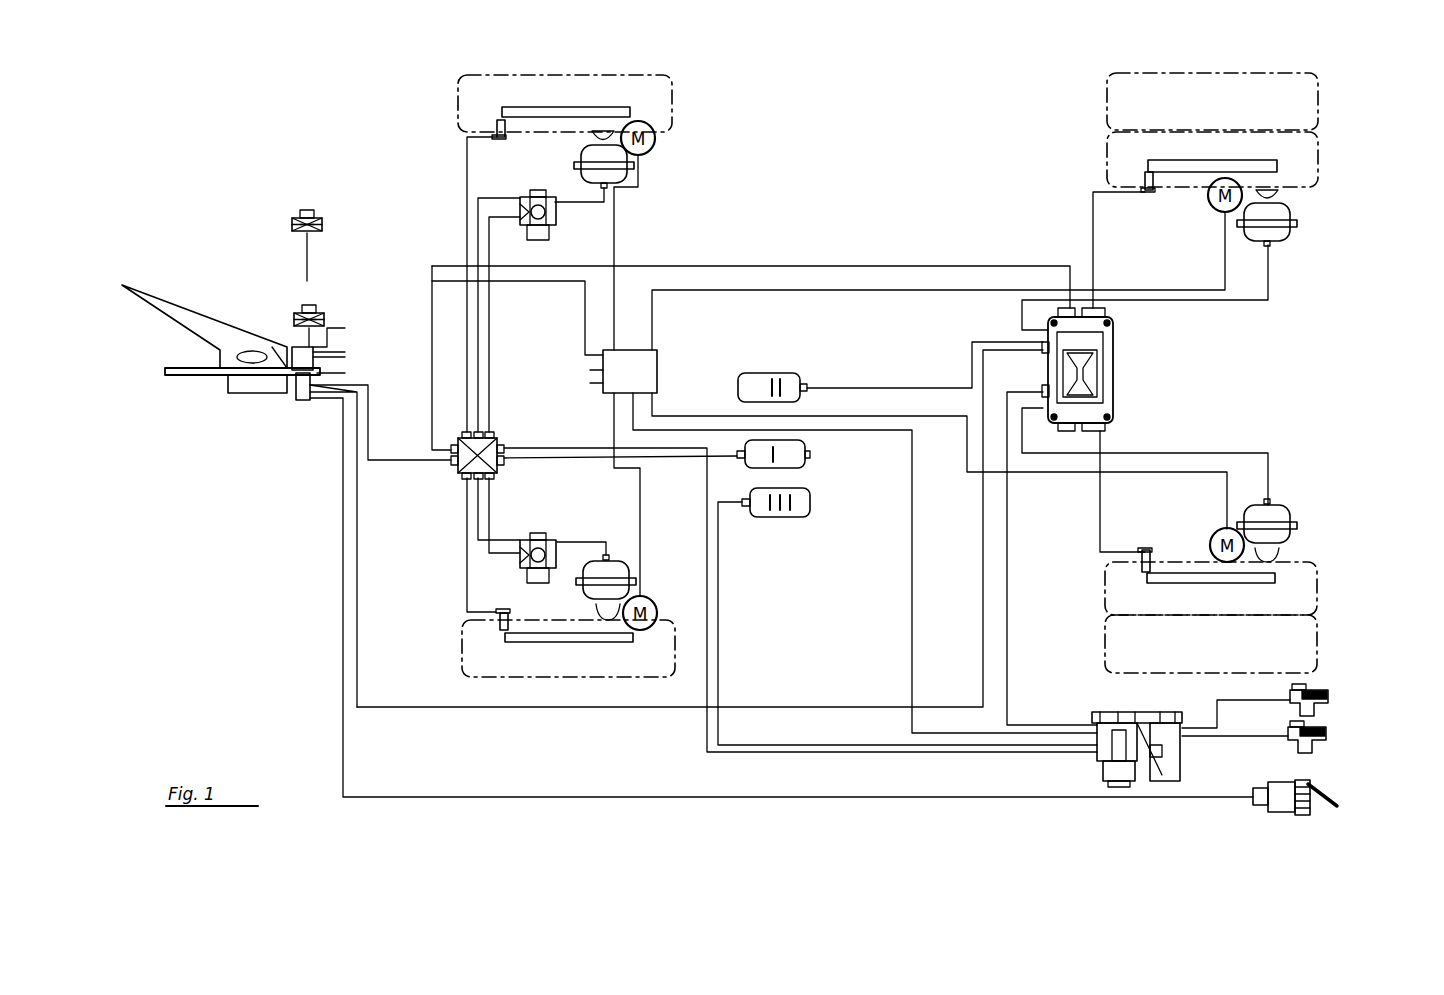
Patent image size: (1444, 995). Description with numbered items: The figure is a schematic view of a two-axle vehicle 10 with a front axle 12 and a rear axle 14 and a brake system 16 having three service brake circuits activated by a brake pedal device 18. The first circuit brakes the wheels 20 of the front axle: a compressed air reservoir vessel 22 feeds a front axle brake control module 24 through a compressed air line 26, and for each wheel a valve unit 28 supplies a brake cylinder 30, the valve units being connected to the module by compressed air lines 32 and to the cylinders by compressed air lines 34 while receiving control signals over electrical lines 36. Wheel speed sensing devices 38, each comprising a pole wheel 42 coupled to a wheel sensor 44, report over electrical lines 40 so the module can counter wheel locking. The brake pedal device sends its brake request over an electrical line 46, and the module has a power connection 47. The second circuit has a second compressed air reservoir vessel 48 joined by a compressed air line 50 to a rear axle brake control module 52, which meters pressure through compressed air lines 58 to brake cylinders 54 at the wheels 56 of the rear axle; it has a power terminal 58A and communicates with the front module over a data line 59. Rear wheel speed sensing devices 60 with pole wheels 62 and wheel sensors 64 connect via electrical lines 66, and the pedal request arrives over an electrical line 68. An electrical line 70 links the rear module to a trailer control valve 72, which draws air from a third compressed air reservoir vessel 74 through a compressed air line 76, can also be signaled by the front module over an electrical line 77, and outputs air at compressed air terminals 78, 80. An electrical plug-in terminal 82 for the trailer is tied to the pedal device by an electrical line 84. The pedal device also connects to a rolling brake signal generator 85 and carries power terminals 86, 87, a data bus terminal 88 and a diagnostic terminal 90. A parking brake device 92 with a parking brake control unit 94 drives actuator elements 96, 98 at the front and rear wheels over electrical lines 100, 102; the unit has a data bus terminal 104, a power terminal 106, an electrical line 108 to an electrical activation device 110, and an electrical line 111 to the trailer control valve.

The two-axle vehicle 10 is at (1364, 100).
The front axle 12 is at (577, 62).
The rear axle 14 is at (1218, 62).
The brake system 16 is at (843, 233).
The brake pedal device 18 is at (232, 385).
The wheels of the front axle 20 is at (672, 96).
The compressed air reservoir vessel 22 is at (806, 453).
The front axle brake control module 24 is at (500, 469).
The compressed air line 26 is at (575, 460).
The valve unit 28 is at (552, 227).
The brake cylinder 30 is at (584, 182).
The compressed air line 32 is at (486, 199).
The compressed air line 34 is at (585, 203).
The electrical line 36 is at (491, 345).
The wheel speed sensing device 38 is at (510, 124).
The electrical line 40 is at (466, 167).
The pole wheel 42 is at (562, 107).
The wheel sensor 44 is at (496, 120).
The electrical line 46 is at (398, 462).
The connection 47 is at (445, 470).
The second compressed air reservoir vessel 48 is at (802, 373).
The compressed air line 50 is at (888, 386).
The rear axle brake control module 52 is at (1113, 360).
The brake cylinder 54 is at (1295, 232).
The wheel of the rear axle 56 is at (1316, 148).
The compressed air line 58 is at (1202, 301).
The terminal 58A is at (1015, 380).
The data line 59 is at (954, 265).
The wheel speed sensing device 60 is at (1156, 180).
The pole wheel 62 is at (1227, 160).
The wheel sensor 64 is at (1140, 172).
The electrical line 66 is at (1093, 235).
The electrical line 68 is at (983, 592).
The electrical line 70 is at (1007, 583).
The trailer control valve 72 is at (1098, 712).
The third compressed air reservoir vessel 74 is at (810, 503).
The compressed air line 76 is at (798, 745).
The electrical line 77 is at (785, 753).
The compressed air terminal 78 is at (1328, 710).
The compressed air terminal 80 is at (1326, 747).
The electrical plug-in terminal 82 is at (1322, 795).
The electrical line 84 is at (943, 797).
The rolling brake signal generator 85 is at (297, 313).
The terminal 86 is at (345, 328).
The terminal 87 is at (345, 352).
The terminal 88 is at (345, 357).
The diagnostic terminal 90 is at (345, 373).
The parking brake device 92 is at (664, 350).
The parking brake control unit 94 is at (657, 377).
The actuator element 96 is at (656, 142).
The actuator element 98 is at (1208, 208).
The electrical line 100 is at (615, 215).
The electrical line 102 is at (1223, 278).
The terminal 104 is at (590, 383).
The terminal 106 is at (590, 370).
The electrical line 108 is at (545, 282).
The electrical activation device 110 is at (323, 226).
The electrical line 111 is at (911, 587).